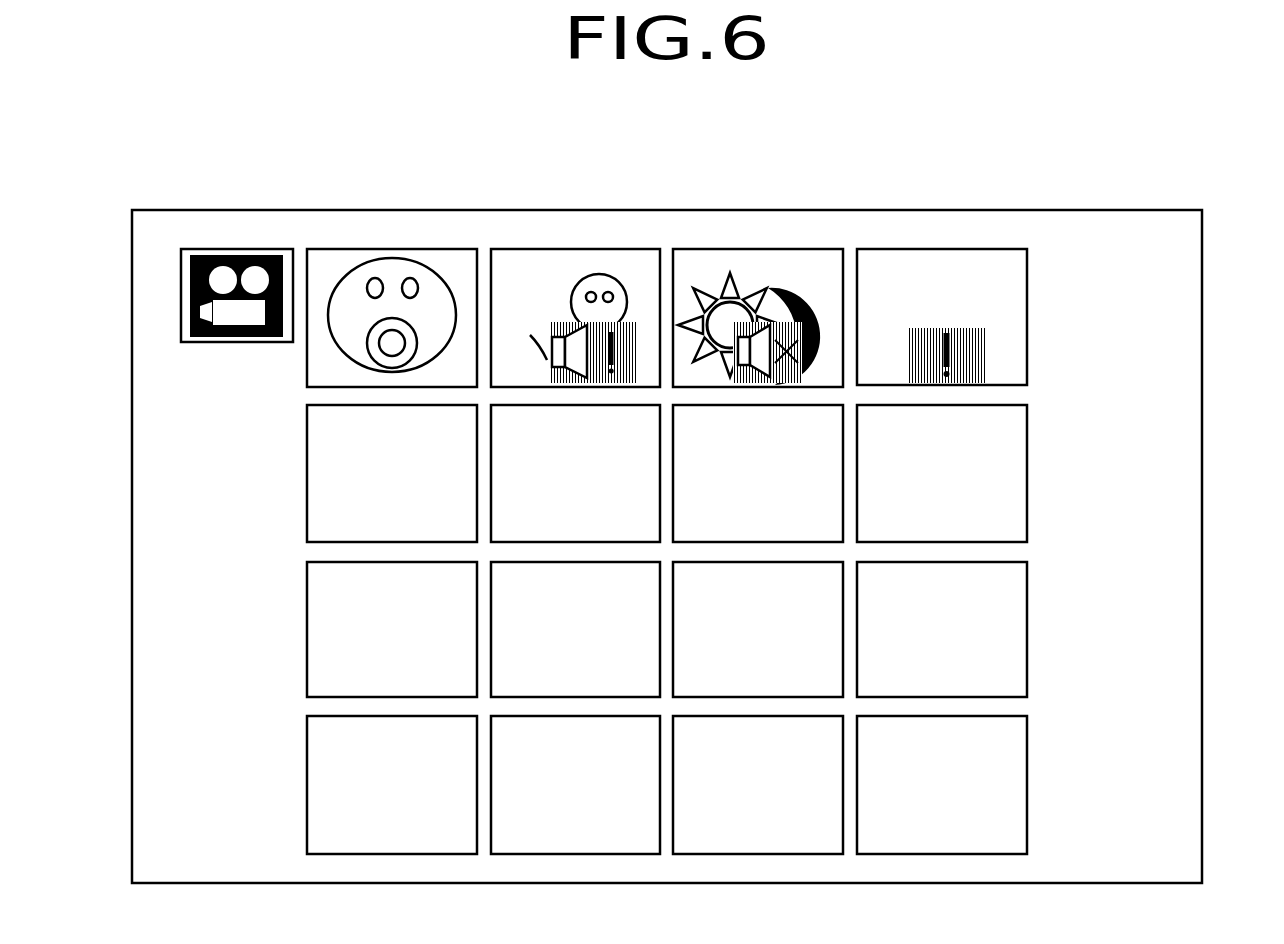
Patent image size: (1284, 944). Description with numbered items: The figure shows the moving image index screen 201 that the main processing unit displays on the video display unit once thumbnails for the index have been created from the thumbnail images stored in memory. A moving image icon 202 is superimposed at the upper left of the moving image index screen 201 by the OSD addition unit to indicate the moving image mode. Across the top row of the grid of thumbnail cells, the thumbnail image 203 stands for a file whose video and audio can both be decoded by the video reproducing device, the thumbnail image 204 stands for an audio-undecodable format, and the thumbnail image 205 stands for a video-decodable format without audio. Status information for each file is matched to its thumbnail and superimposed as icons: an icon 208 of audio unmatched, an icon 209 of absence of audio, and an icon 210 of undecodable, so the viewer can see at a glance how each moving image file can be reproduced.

The moving image index screen 201 is at (138, 243).
The moving image icon 202 is at (214, 249).
The thumbnail image 203 is at (397, 249).
The thumbnail image 204 is at (582, 249).
The thumbnail image 205 is at (765, 249).
The icon of audio unmatched 208 is at (549, 384).
The icon of absence of audio 209 is at (800, 383).
The icon of undecodable 210 is at (947, 249).